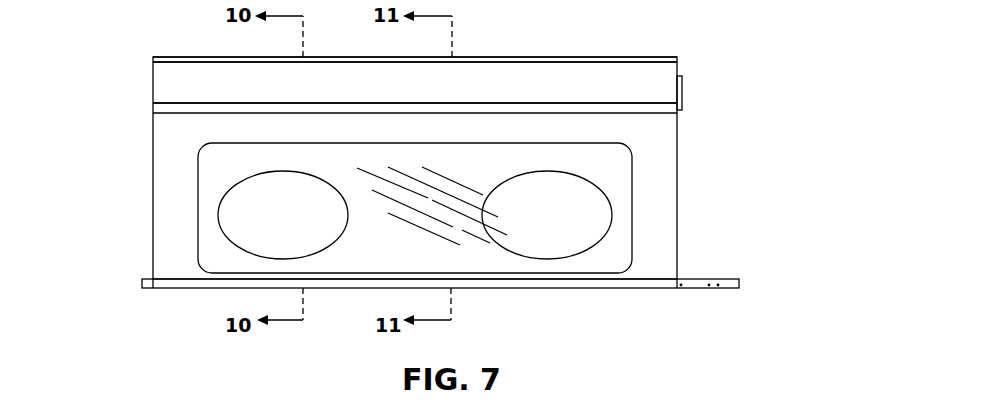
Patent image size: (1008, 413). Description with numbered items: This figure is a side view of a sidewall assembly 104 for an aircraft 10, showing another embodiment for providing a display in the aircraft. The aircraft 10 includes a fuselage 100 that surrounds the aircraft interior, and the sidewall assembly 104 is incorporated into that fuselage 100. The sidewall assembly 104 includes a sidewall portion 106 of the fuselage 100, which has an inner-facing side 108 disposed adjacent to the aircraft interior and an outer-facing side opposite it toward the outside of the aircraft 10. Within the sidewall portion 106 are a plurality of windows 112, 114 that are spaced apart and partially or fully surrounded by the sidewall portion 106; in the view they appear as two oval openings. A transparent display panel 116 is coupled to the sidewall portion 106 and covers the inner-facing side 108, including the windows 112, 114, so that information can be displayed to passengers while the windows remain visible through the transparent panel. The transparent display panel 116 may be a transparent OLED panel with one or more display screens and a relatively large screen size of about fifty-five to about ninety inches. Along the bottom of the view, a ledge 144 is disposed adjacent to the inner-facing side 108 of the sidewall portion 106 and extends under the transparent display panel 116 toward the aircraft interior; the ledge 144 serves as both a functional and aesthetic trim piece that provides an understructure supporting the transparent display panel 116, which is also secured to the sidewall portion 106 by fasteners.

The aircraft 10 is at (320, 60).
The fuselage 100 is at (553, 56).
The sidewall assembly 104 is at (133, 92).
The sidewall portion 106 is at (438, 172).
The inner-facing side 108 is at (488, 172).
The window 112 is at (250, 232).
The window 114 is at (547, 241).
The transparent display panel 116 is at (208, 170).
The ledge 144 is at (185, 283).